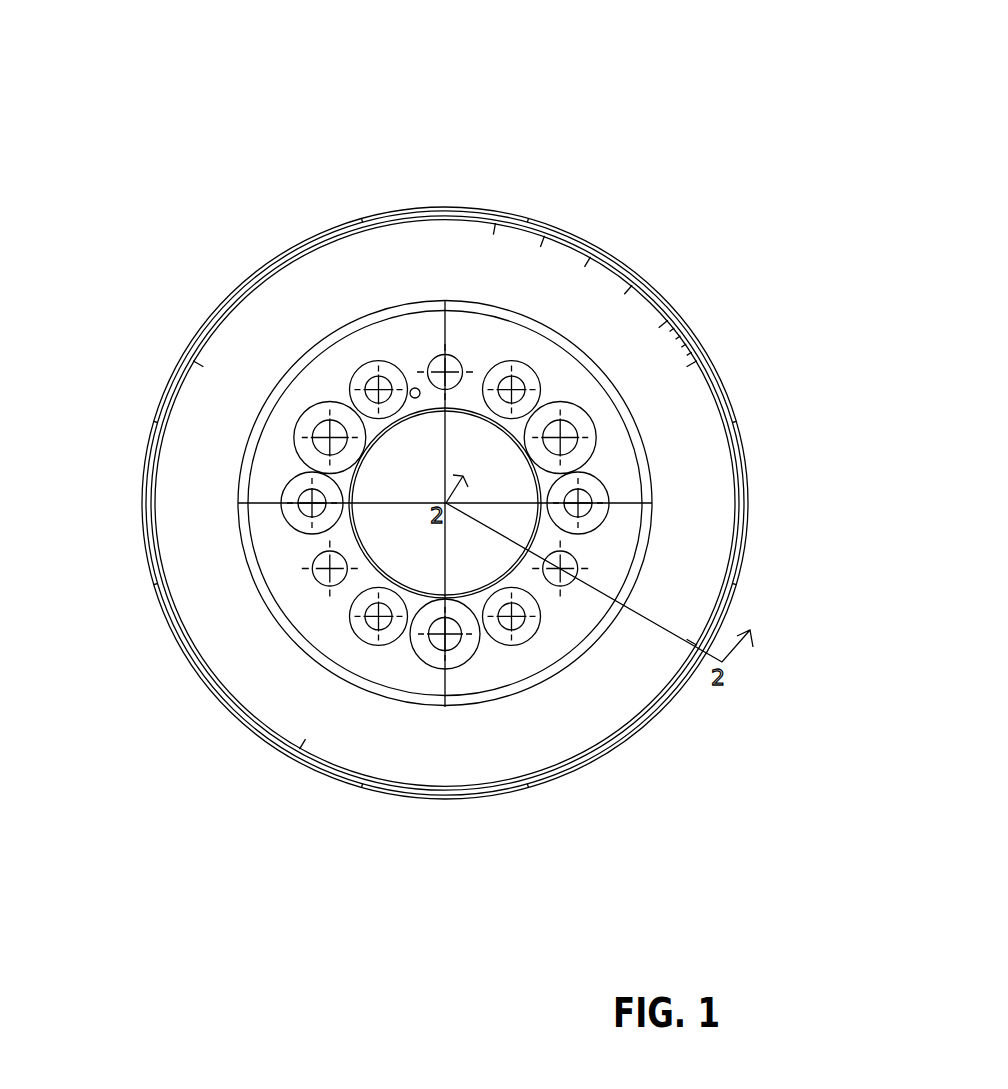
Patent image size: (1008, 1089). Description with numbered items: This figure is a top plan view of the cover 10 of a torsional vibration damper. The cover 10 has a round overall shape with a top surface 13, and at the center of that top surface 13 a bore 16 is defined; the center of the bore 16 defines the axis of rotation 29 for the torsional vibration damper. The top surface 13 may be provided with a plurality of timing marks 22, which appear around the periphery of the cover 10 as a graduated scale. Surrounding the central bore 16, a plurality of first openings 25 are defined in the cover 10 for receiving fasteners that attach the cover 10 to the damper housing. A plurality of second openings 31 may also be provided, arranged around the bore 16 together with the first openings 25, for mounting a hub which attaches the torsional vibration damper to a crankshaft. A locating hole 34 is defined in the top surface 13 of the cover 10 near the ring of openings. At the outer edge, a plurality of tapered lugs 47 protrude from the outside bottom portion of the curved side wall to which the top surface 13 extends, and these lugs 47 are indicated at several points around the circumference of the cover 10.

The cover 10 is at (529, 111).
The top surface 13 is at (299, 295).
The bore 16 is at (360, 530).
The timing marks 22 is at (623, 283).
The first openings 25 is at (437, 355).
The axis of rotation 29 is at (446, 503).
The second openings 31 is at (293, 497).
The locating hole 34 is at (410, 386).
The tapered lugs 47 is at (277, 252).